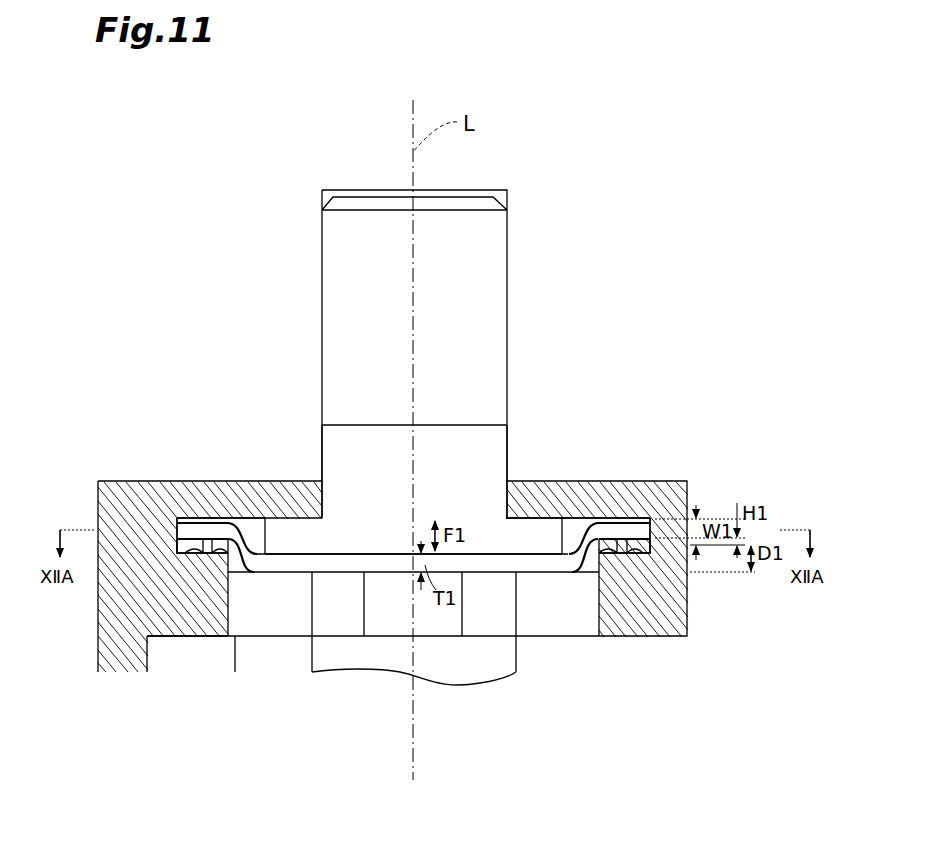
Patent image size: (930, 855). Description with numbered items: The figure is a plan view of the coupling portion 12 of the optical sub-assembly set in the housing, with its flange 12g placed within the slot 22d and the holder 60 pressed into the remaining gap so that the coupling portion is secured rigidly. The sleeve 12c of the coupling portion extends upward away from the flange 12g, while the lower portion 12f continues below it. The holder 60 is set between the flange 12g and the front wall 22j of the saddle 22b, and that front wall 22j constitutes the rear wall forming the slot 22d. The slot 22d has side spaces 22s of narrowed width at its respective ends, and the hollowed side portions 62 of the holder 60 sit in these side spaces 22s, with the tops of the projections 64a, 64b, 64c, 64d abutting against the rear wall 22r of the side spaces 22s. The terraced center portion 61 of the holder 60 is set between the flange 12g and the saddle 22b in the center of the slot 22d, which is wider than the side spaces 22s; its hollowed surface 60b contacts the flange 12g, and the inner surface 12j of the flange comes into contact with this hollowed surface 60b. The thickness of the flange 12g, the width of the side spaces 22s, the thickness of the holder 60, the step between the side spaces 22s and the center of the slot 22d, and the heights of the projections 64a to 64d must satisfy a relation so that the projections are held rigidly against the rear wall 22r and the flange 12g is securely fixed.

The coupling portion 12 is at (474, 367).
The sleeve 12c is at (477, 462).
The shaft lower portion 12f is at (386, 608).
The flange 12g is at (550, 525).
The inner surface 12j is at (542, 572).
The side spaces 22s is at (190, 518).
The slot 22d is at (262, 540).
The rear wall 22r is at (208, 538).
The front wall 22j is at (212, 553).
The saddle 22b is at (573, 602).
The holder 60 is at (320, 560).
The hollowed surface 60b is at (527, 552).
The terraced center portion 61 is at (270, 573).
The hollowed side portions 62 is at (178, 530).
The projection 64a is at (632, 552).
The projection 64b is at (177, 548).
The projection 64c is at (615, 545).
The projection 64d is at (226, 552).